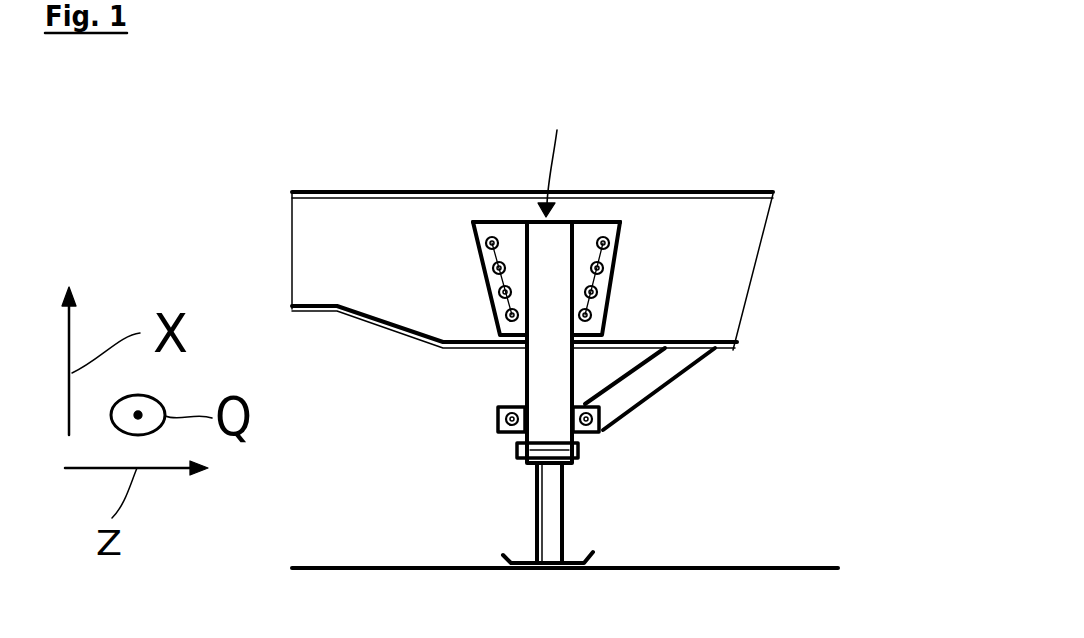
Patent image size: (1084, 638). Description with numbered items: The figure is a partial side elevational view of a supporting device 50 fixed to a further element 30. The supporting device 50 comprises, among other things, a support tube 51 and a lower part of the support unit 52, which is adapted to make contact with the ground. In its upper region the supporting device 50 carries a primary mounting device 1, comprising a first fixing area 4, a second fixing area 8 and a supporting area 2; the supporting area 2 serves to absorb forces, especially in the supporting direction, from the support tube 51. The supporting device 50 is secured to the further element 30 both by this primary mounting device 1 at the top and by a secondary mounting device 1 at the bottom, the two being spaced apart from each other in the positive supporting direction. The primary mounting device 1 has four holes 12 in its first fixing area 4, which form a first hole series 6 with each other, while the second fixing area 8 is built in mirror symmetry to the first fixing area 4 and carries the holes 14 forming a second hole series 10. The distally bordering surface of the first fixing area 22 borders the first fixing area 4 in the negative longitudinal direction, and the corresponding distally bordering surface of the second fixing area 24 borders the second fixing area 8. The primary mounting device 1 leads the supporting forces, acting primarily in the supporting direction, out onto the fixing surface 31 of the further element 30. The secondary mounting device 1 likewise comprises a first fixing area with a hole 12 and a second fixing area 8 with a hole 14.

The mounting device 1 is at (404, 166).
The supporting area 2 is at (537, 140).
The supporting device 50 is at (532, 130).
The first fixing area 4 is at (506, 236).
The first hole series 6 is at (480, 260).
The second fixing area 8 is at (590, 238).
The second hole series 10 is at (614, 258).
The holes 12 is at (492, 270).
The hole 14 is at (608, 291).
The distally bordering surface of the first fixing area 22 is at (478, 242).
The distally bordering surface of the second fixing area 24 is at (622, 235).
The further element 30 is at (733, 253).
The fixing surface 31 is at (611, 231).
The support tube 51 is at (553, 358).
The lower part of the support unit 52 is at (545, 497).